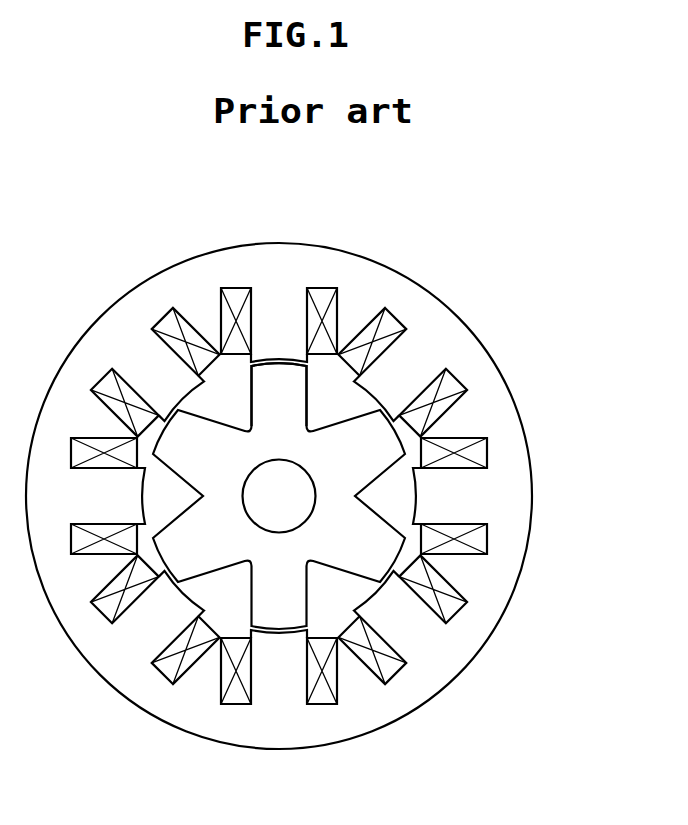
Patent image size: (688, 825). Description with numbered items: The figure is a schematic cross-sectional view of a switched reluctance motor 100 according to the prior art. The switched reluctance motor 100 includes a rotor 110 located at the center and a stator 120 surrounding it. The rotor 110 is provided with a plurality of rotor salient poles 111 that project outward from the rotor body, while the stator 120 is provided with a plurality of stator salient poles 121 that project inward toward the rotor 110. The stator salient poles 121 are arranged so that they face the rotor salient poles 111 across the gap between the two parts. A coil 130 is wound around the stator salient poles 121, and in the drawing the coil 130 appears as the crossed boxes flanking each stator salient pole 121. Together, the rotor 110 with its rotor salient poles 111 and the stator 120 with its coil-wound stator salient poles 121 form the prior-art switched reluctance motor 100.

The switched reluctance motor 100 is at (78, 228).
The rotor 110 is at (282, 443).
The rotor salient poles 111 is at (300, 388).
The stator 120 is at (279, 446).
The stator salient poles 121 is at (383, 382).
The coil 130 is at (490, 534).